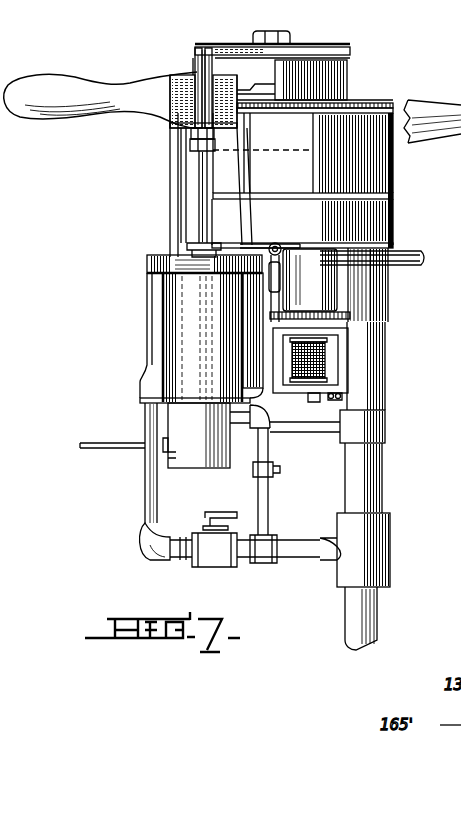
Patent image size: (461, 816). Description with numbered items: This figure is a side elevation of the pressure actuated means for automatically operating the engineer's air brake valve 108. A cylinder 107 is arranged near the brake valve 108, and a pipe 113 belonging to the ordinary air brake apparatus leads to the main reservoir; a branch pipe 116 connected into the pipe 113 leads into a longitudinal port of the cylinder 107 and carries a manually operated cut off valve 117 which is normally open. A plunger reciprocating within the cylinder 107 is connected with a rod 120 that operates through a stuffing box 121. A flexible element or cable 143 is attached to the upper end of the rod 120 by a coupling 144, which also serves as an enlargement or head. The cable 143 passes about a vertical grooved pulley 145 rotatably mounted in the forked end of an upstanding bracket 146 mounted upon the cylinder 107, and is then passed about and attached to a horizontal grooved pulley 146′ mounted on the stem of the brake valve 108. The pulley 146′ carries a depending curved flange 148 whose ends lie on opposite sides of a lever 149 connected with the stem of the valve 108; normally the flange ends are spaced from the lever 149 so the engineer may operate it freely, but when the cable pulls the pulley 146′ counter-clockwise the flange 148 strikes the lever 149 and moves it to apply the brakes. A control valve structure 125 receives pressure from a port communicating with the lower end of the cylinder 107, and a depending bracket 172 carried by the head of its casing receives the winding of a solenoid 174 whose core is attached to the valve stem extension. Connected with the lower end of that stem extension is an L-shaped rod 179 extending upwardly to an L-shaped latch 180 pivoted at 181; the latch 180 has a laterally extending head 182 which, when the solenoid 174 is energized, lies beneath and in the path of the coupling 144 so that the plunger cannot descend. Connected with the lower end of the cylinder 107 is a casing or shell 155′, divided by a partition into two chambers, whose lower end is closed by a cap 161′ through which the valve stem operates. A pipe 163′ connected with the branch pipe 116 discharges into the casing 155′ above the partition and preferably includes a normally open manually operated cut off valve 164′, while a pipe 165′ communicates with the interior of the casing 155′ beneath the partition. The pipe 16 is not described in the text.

The lever 149 is at (75, 83).
The horizontal grooved pulley 146′ is at (328, 50).
The depending curved flange 148 is at (348, 80).
The vertical grooved pulley 145 is at (194, 118).
The flexible element or cable 143 is at (191, 134).
The coupling 144 is at (190, 146).
The upstanding bracket 146 is at (182, 185).
The laterally extending head 182 is at (245, 158).
The engineer's air brake valve 108 is at (394, 172).
The rod 120 is at (202, 219).
The stuffing box 121 is at (187, 251).
The pivot 181 is at (256, 228).
The L-shaped latch 180 is at (275, 242).
The pipe 16 is at (412, 252).
The control valve structure 125 is at (337, 292).
The cylinder 107 is at (180, 333).
The depending bracket 172 is at (338, 352).
The solenoid 174 is at (325, 372).
The casing or shell 155′ is at (177, 420).
The pipe 165′ is at (78, 448).
The branch pipe 116 is at (146, 463).
The cap 161′ is at (176, 468).
The manually operated cut off valve 164′ is at (253, 470).
The L-shaped rod 179 is at (311, 405).
The pipe 163′ is at (269, 510).
The manually operated cut off valve 117 is at (213, 567).
The pipe 113 is at (378, 631).